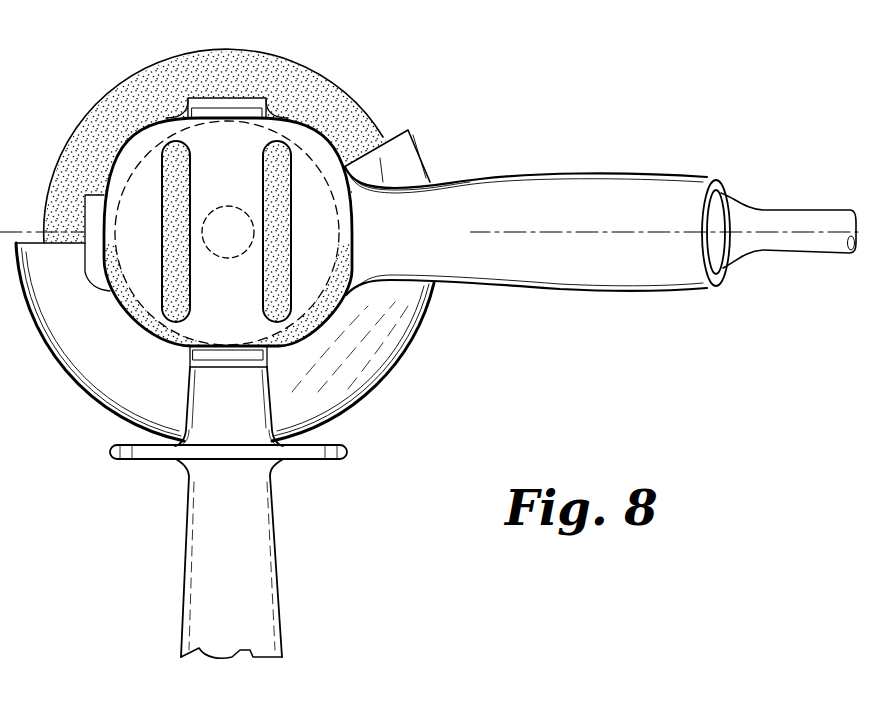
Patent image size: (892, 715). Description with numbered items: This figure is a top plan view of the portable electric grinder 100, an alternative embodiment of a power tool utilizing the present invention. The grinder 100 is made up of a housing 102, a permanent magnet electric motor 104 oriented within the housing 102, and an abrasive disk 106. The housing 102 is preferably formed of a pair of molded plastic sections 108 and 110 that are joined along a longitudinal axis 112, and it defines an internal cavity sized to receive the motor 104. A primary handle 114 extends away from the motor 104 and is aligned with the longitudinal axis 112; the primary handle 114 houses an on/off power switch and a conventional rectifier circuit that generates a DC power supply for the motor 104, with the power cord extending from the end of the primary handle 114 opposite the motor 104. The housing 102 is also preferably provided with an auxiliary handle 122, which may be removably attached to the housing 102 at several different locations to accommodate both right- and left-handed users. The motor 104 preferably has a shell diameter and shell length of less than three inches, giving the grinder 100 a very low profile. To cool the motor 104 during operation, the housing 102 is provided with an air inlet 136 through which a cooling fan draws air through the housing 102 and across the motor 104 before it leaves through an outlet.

The portable electric grinder 100 is at (429, 342).
The housing 102 is at (341, 124).
The permanent magnet electric motor 104 is at (296, 145).
The abrasive disk 106 is at (98, 106).
The molded plastic section 108 is at (526, 238).
The molded plastic section 110 is at (620, 292).
The longitudinal axis 112 is at (653, 172).
The primary handle 114 is at (491, 291).
The auxiliary handle 122 is at (282, 562).
The air inlet 136 is at (175, 307).